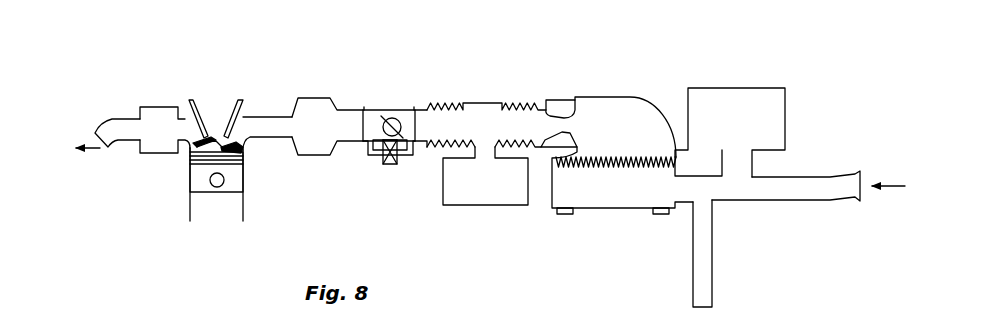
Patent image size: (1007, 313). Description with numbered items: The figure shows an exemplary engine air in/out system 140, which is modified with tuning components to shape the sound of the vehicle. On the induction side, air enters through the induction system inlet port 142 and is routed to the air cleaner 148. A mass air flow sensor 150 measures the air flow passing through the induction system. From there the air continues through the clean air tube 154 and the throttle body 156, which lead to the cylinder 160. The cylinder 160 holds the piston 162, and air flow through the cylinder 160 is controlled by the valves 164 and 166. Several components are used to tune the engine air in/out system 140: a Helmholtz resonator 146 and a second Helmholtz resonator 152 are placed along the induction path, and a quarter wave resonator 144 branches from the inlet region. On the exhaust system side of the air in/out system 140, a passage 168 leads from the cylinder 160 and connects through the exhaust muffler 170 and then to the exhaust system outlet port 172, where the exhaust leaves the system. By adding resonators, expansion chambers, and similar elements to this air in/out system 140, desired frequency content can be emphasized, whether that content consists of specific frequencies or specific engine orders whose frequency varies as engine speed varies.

The engine air in/out system 140 is at (430, 87).
The induction system inlet port 142 is at (828, 177).
The quarter wave resonator 144 is at (713, 258).
The Helmholtz resonator 146 is at (786, 110).
The air cleaner 148 is at (594, 210).
The mass air flow sensor 150 is at (551, 108).
The Helmholtz resonator 152 is at (471, 206).
The clean air tube 154 is at (433, 148).
The throttle body 156 is at (393, 108).
The cylinder 160 is at (255, 190).
The piston 162 is at (214, 193).
The valve 164 is at (232, 100).
The valve 166 is at (204, 100).
The passage 168 is at (183, 141).
The exhaust muffler 170 is at (147, 155).
The exhaust system outlet port 172 is at (106, 118).